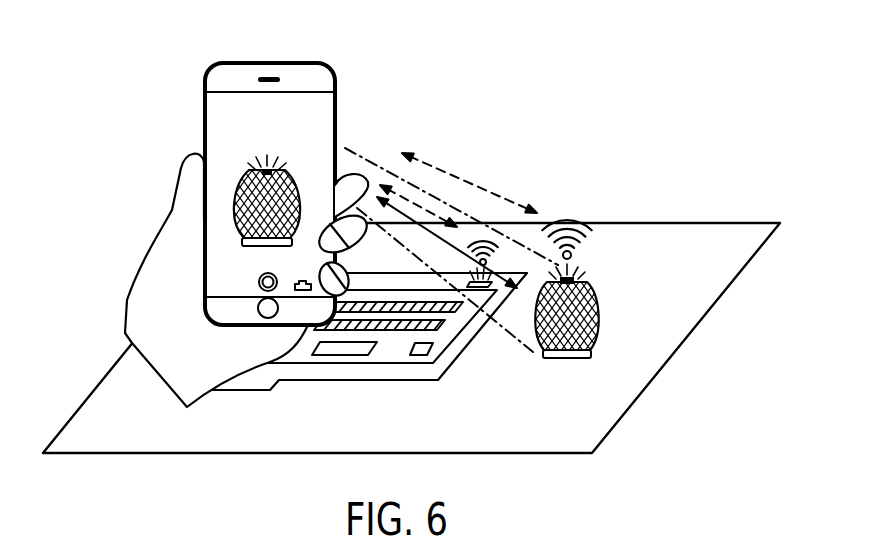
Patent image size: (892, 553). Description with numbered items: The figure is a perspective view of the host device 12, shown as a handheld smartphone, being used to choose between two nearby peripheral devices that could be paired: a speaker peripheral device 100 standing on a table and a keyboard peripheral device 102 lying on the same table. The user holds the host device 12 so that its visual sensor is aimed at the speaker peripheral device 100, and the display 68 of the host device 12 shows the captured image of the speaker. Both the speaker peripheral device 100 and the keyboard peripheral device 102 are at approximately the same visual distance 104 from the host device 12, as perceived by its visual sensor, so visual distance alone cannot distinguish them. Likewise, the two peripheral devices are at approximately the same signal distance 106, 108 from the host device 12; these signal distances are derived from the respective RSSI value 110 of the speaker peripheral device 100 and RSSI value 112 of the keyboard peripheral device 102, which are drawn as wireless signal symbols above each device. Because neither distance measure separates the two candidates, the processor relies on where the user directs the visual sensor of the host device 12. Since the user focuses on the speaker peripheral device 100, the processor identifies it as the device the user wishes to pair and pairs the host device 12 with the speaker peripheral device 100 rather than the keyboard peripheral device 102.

The host device 12 is at (238, 171).
The display 68 is at (217, 120).
The speaker peripheral device 100 is at (598, 297).
The keyboard peripheral device 102 is at (356, 382).
The visual distance 104 is at (443, 243).
The signal distance 106 is at (428, 167).
The signal distance 108 is at (430, 208).
The RSSI value 110 is at (567, 219).
The RSSI value 112 is at (484, 240).